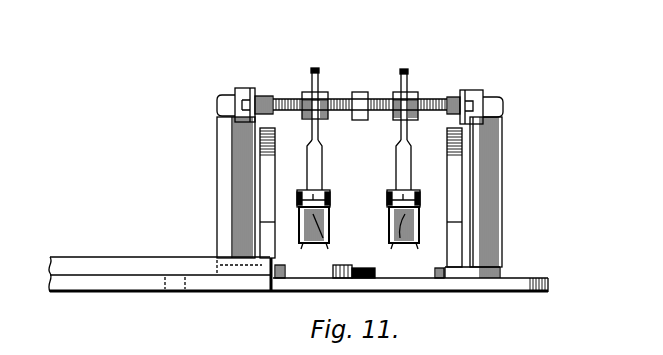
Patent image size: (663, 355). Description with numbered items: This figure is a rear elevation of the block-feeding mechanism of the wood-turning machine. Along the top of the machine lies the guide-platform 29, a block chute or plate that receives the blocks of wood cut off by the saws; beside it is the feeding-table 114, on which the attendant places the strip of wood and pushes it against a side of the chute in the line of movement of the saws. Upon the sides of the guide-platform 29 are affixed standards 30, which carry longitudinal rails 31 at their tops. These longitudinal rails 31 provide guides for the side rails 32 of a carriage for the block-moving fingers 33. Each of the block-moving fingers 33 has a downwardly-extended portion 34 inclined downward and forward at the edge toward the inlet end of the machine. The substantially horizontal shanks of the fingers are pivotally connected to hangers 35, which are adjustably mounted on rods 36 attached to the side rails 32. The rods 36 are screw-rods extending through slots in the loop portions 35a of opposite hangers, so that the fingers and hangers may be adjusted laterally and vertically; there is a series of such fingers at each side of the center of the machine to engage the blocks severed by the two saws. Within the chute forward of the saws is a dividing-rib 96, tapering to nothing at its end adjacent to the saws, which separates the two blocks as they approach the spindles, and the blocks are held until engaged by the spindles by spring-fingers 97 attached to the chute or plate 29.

The guide-platform 29 is at (508, 287).
The standards 30 is at (242, 190).
The longitudinal rails 31 is at (235, 92).
The side rails 32 is at (255, 88).
The block-moving fingers 33 is at (330, 238).
The downwardly-extended portions 34 is at (306, 243).
The hangers 35 is at (315, 165).
The loop portions 35a is at (316, 68).
The rods 36 is at (336, 98).
The dividing-rib 96 is at (368, 264).
The spring-fingers 97 is at (283, 266).
The feeding-table 114 is at (113, 282).